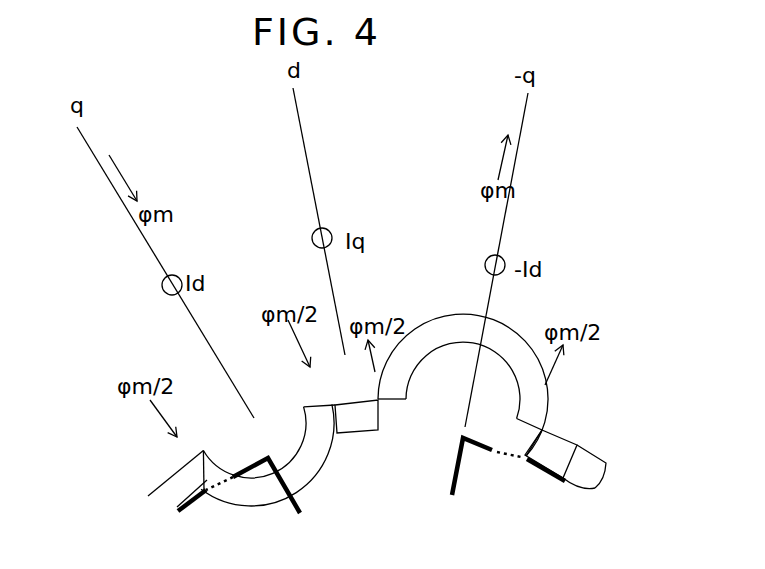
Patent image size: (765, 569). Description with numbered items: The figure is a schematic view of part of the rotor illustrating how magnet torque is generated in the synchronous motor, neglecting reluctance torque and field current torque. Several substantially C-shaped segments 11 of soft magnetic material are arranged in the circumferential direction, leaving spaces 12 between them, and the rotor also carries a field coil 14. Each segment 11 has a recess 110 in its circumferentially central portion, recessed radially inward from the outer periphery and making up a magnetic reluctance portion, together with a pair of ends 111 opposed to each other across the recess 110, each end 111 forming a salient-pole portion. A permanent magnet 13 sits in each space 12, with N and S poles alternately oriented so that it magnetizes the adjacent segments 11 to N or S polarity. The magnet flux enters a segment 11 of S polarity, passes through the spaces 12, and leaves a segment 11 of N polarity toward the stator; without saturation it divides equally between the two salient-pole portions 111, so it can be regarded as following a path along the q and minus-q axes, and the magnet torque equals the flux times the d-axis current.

The recess 110 is at (243, 448).
The segment 11 is at (318, 465).
The end 111 is at (188, 460).
The space 12 is at (348, 440).
The permanent magnet 13 is at (367, 432).
The field coil 14 is at (293, 513).